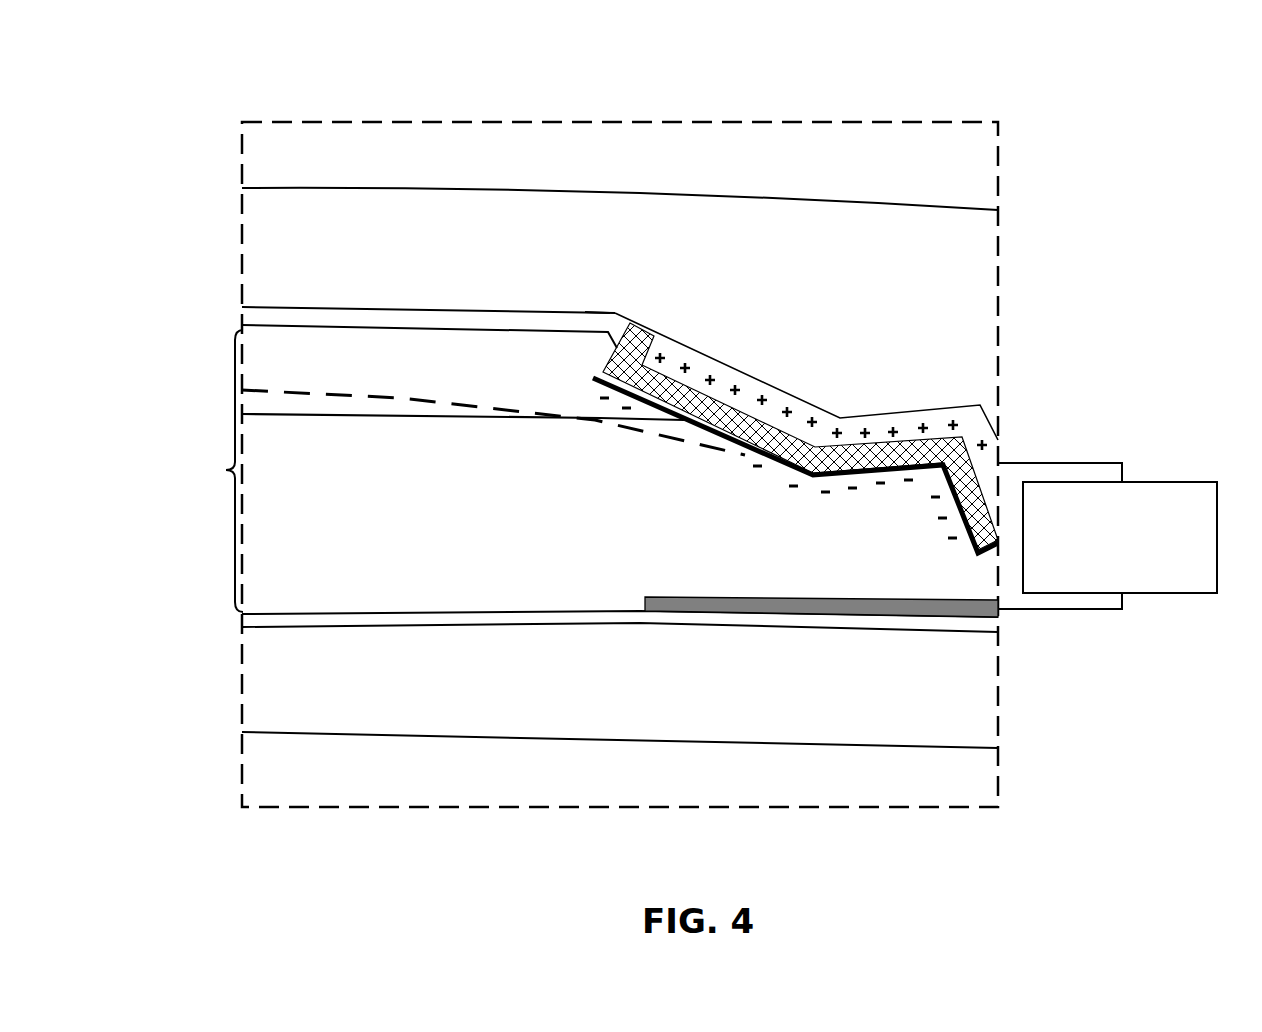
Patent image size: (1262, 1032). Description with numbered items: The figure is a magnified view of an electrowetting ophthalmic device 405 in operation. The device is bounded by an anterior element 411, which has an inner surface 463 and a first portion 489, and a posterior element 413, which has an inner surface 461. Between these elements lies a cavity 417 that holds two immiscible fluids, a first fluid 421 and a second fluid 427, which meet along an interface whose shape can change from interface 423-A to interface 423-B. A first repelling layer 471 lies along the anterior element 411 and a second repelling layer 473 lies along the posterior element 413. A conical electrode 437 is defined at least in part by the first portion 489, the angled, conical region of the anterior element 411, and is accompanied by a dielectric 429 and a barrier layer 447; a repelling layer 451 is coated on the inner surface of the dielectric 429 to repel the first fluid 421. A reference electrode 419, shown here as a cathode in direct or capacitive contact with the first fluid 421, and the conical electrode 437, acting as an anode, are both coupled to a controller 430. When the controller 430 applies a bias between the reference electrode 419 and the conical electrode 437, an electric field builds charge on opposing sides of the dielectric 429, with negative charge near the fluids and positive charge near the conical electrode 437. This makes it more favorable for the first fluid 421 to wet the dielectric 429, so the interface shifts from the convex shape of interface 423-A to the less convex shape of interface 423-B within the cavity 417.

The electrowetting ophthalmic device 405 is at (95, 37).
The anterior element 411 is at (302, 260).
The posterior element 413 is at (302, 701).
The cavity 417 is at (211, 471).
The reference electrode 419 is at (838, 618).
The first fluid 421 is at (302, 511).
The interface 423-A is at (442, 396).
The interface 423-B is at (450, 423).
The second fluid 427 is at (302, 367).
The dielectric 429 is at (636, 331).
The controller 430 is at (1103, 569).
The conical electrode 437 is at (672, 320).
The barrier layer 447 is at (818, 436).
The repelling layer 451 is at (585, 379).
The inner surface 461 is at (595, 632).
The inner surface 463 is at (597, 306).
The first repelling layer 471 is at (396, 312).
The second repelling layer 473 is at (448, 622).
The first portion 489 is at (840, 394).